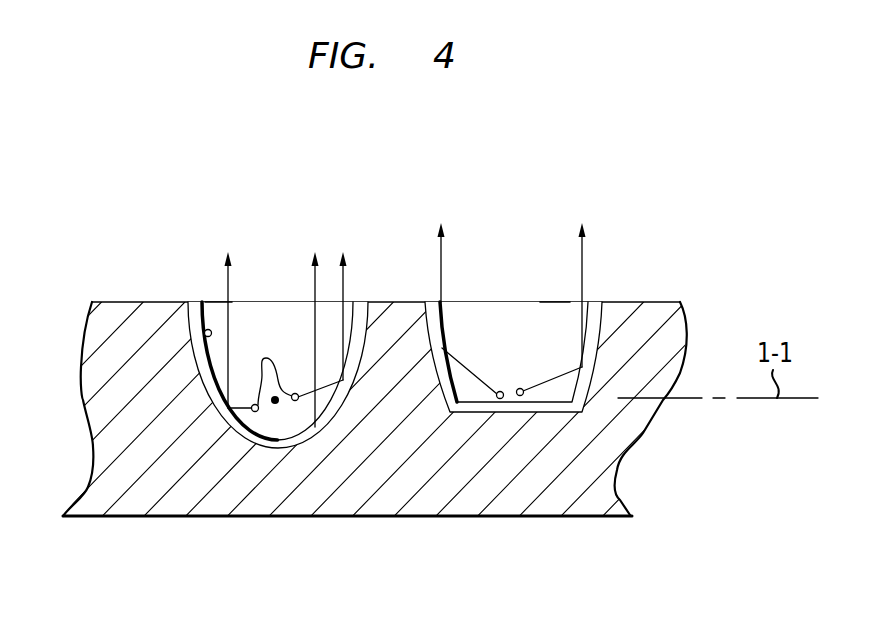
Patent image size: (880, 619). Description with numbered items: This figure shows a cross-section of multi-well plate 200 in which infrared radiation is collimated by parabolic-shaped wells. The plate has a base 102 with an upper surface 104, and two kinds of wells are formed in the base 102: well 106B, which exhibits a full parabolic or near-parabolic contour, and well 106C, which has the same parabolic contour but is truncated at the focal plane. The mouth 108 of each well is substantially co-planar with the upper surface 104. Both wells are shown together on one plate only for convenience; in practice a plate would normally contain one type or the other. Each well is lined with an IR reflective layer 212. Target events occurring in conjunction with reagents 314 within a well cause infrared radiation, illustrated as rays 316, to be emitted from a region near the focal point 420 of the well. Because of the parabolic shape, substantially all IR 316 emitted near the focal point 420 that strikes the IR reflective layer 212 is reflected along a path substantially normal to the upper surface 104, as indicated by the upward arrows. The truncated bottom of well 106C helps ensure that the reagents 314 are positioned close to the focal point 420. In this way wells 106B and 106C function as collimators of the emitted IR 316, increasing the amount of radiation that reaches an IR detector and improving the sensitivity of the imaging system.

The base 102 is at (616, 463).
The upper surface 104 is at (388, 302).
The well 106B is at (276, 228).
The well 106C is at (476, 317).
The mouth 108 is at (217, 300).
The multi-well plate 200 is at (602, 158).
The IR reflective layer 212 is at (208, 334).
The reagents 314 is at (270, 365).
The rays 316 is at (441, 268).
The focal point 420 is at (275, 404).